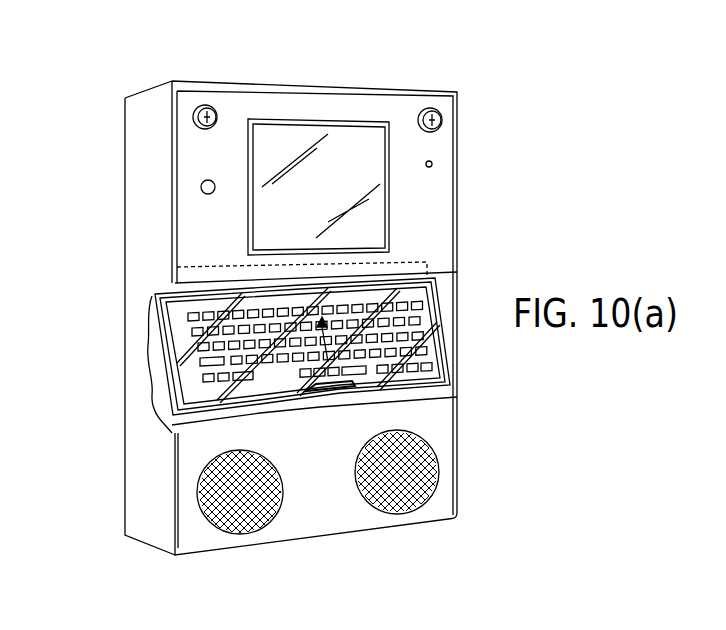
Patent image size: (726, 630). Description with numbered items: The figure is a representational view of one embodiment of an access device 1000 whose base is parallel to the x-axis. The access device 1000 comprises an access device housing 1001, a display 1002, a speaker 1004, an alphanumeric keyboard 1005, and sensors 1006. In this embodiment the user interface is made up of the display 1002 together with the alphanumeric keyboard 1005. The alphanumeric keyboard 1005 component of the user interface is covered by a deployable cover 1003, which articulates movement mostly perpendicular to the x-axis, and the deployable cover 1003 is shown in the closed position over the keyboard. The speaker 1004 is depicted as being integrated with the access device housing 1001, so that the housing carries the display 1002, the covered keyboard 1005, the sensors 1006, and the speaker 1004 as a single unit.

The access device 1000 is at (133, 59).
The access device housing 1001 is at (125, 162).
The display 1002 is at (355, 218).
The deployable cover 1003 is at (182, 362).
The speaker 1004 is at (250, 537).
The alphanumeric keyboard 1005 is at (457, 390).
The sensors 1006 is at (433, 163).